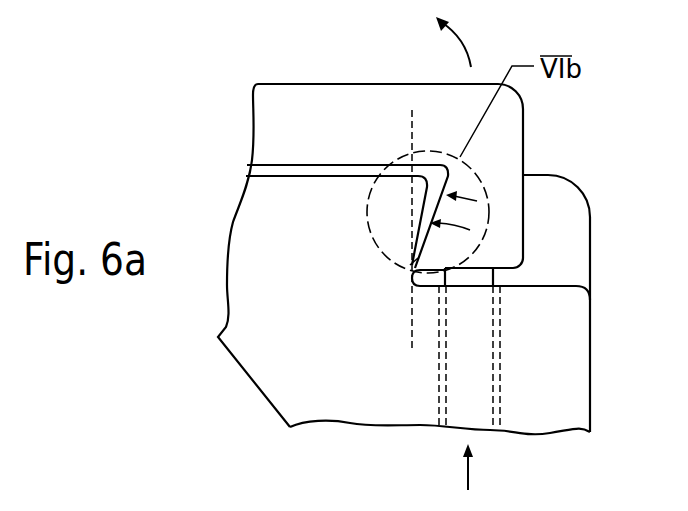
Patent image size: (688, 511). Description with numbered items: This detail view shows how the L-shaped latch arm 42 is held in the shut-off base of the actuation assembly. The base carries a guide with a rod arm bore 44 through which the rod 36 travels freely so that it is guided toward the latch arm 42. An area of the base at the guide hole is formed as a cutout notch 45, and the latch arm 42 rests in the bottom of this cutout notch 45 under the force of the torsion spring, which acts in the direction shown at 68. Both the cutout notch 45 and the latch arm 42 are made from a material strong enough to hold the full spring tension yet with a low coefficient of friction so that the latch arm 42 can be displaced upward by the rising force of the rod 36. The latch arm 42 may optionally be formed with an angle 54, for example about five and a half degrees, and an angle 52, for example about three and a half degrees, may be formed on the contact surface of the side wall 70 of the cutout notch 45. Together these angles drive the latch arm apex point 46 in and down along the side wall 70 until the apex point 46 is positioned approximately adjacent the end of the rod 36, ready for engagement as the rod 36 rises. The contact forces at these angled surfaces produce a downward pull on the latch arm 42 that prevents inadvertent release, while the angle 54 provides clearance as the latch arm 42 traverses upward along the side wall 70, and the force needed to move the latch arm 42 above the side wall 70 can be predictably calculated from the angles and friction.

The direction of torsion spring force 68 is at (235, 123).
The latch arm 42 is at (505, 140).
The cutout notch 45 is at (568, 205).
The rod 36 is at (497, 277).
The rod arm bore 44 is at (500, 363).
The angle on latch arm 54 is at (400, 194).
The angle on side wall contact surface 52 is at (399, 223).
The side wall 70 is at (422, 223).
The latch arm apex point 46 is at (412, 273).